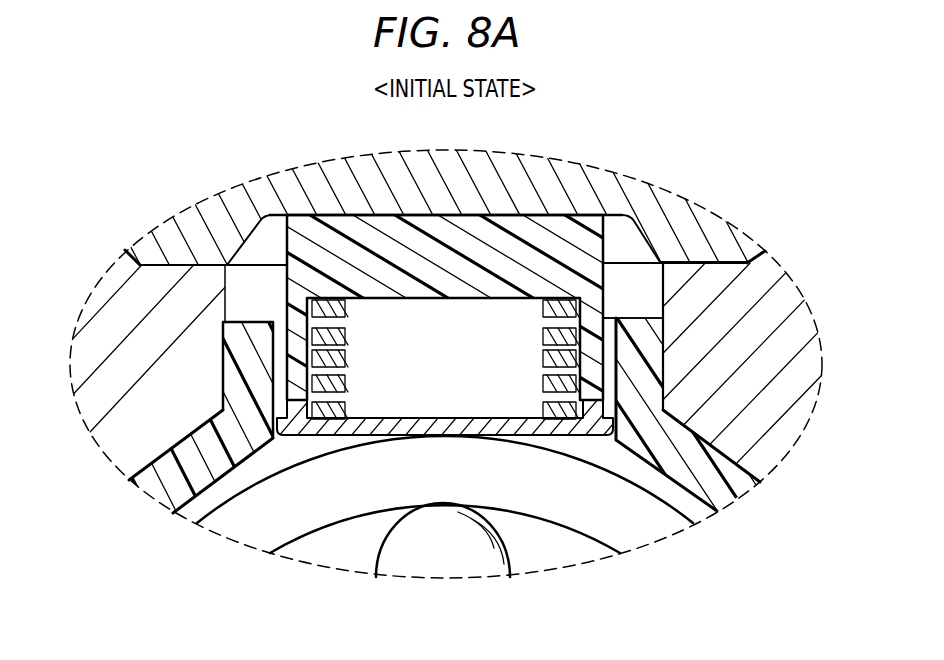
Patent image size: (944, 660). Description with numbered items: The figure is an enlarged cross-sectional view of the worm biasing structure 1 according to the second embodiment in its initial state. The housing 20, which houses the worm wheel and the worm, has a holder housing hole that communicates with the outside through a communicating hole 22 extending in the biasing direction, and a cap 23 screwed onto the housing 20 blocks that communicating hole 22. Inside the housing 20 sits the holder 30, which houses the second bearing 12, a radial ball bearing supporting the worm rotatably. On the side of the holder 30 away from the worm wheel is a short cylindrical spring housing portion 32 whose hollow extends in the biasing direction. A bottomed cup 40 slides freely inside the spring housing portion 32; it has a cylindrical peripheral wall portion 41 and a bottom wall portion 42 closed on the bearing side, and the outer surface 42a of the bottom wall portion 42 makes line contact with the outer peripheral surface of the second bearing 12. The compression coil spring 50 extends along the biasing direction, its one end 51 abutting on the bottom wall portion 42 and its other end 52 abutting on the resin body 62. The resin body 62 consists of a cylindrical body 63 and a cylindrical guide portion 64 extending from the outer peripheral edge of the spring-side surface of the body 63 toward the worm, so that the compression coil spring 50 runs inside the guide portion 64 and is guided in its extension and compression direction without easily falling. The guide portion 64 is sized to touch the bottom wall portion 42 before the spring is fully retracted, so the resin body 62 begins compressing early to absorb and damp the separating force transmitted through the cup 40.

The worm biasing structure 1 is at (678, 171).
The second bearing 12 is at (244, 480).
The housing 20 is at (785, 448).
The communicating hole 22 is at (643, 283).
The cap 23 is at (585, 193).
The holder 30 is at (127, 481).
The spring housing portion 32 is at (178, 437).
The cup 40 is at (175, 267).
The peripheral wall portion 41 is at (280, 315).
The bottom wall portion 42 is at (517, 437).
The outer surface 42a is at (337, 437).
The compression coil spring 50 is at (618, 355).
The one end 51 is at (543, 408).
The other end 52 is at (543, 307).
The resin body 62 is at (283, 243).
The body 63 is at (348, 248).
The guide portion 64 is at (231, 368).